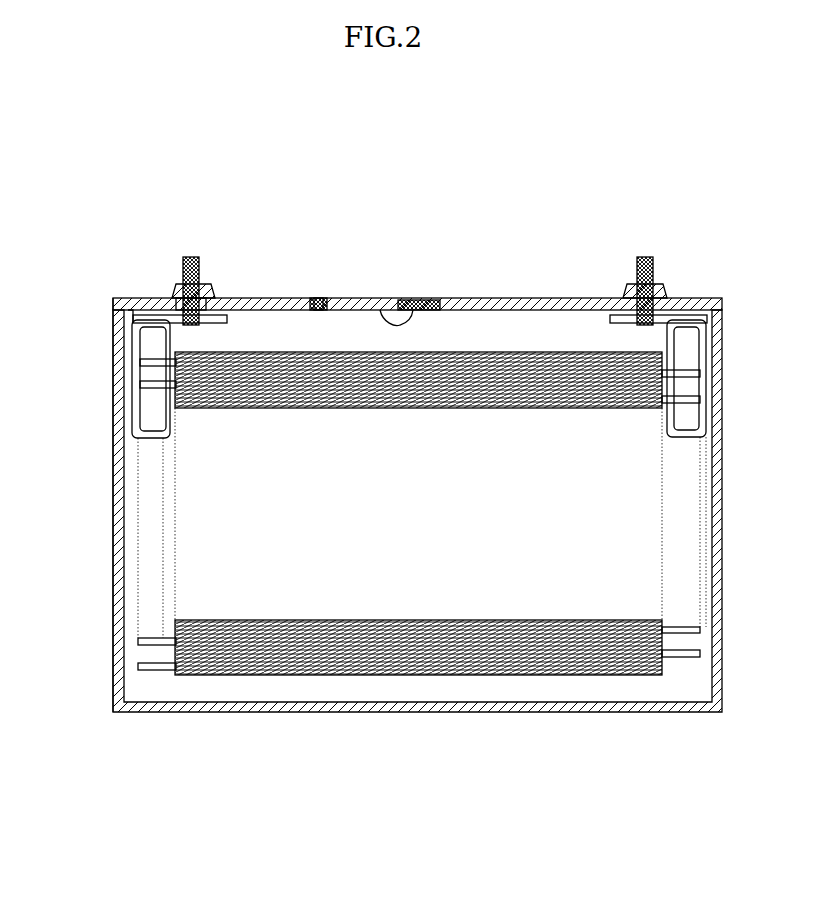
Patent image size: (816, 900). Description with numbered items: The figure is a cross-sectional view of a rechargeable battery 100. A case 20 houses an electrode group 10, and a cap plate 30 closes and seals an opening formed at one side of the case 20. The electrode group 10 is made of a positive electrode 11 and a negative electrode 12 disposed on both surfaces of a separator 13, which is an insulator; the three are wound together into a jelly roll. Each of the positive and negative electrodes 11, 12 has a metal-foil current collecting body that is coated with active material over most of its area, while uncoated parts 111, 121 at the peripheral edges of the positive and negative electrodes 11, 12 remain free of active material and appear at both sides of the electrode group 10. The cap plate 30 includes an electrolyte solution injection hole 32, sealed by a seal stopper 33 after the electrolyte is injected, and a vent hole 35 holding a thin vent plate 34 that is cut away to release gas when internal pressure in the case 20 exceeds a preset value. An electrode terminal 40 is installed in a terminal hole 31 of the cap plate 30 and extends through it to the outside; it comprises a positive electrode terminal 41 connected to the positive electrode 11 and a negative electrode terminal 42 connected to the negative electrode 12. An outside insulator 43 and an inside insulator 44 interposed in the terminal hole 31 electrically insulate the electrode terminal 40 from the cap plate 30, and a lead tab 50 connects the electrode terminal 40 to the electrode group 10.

The rechargeable battery 100 is at (392, 123).
The electrode group 10 is at (503, 604).
The positive electrode 11 is at (260, 670).
The negative electrode 12 is at (319, 656).
The separator 13 is at (427, 654).
The case 20 is at (575, 712).
The cap plate 30 is at (511, 297).
The terminal hole 31 is at (213, 282).
The electrolyte solution injection hole 32 is at (320, 297).
The seal stopper 33 is at (310, 297).
The vent plate 34 is at (428, 298).
The vent hole 35 is at (393, 297).
The electrode terminal 40 is at (420, 250).
The positive electrode terminal 41 is at (190, 256).
The negative electrode terminal 42 is at (644, 256).
The outside insulator 43 is at (161, 297).
The inside insulator 44 is at (143, 313).
The lead tab 50 is at (112, 348).
The uncoated part 111 is at (156, 670).
The uncoated part 121 is at (680, 658).